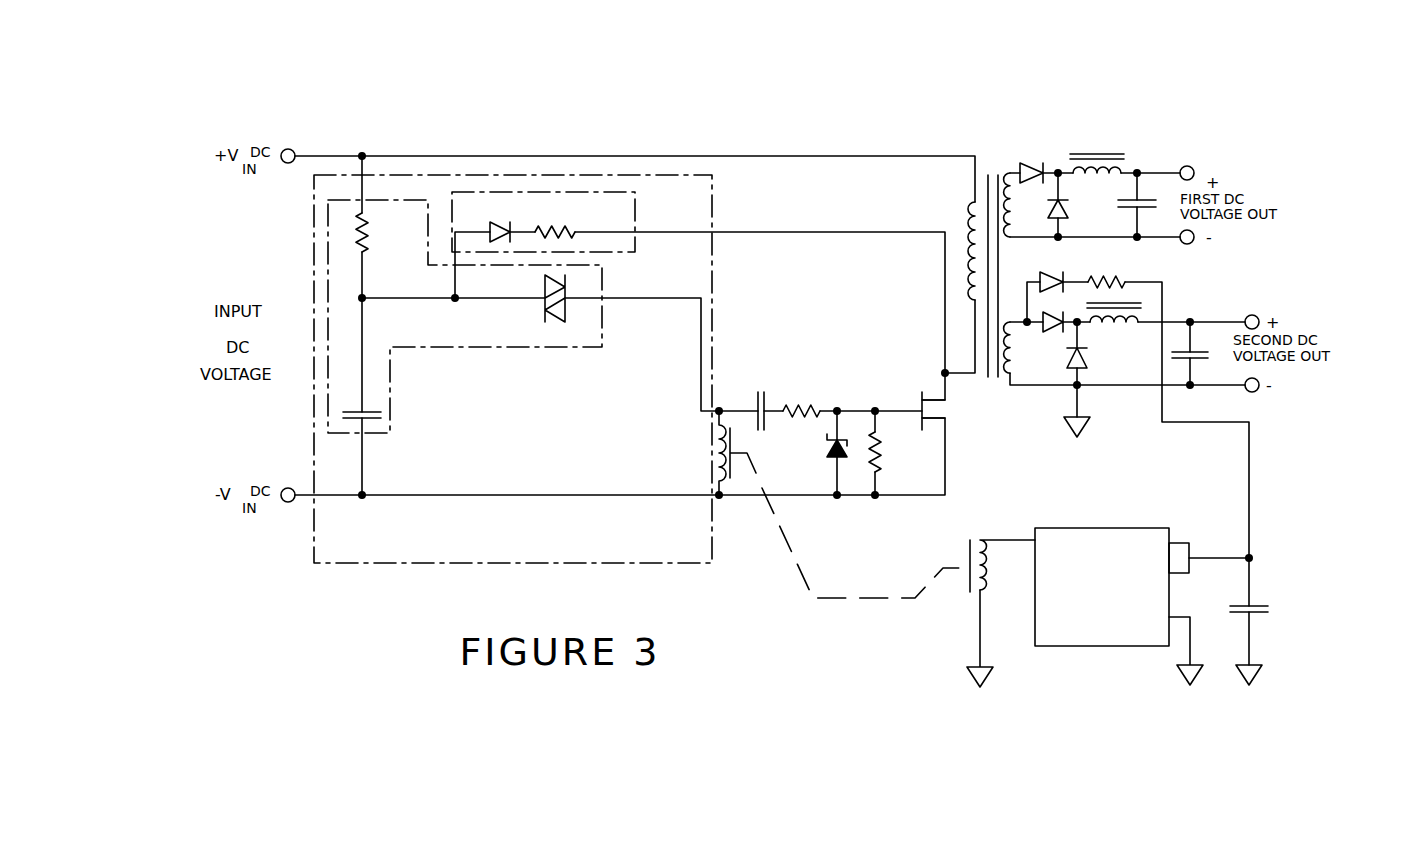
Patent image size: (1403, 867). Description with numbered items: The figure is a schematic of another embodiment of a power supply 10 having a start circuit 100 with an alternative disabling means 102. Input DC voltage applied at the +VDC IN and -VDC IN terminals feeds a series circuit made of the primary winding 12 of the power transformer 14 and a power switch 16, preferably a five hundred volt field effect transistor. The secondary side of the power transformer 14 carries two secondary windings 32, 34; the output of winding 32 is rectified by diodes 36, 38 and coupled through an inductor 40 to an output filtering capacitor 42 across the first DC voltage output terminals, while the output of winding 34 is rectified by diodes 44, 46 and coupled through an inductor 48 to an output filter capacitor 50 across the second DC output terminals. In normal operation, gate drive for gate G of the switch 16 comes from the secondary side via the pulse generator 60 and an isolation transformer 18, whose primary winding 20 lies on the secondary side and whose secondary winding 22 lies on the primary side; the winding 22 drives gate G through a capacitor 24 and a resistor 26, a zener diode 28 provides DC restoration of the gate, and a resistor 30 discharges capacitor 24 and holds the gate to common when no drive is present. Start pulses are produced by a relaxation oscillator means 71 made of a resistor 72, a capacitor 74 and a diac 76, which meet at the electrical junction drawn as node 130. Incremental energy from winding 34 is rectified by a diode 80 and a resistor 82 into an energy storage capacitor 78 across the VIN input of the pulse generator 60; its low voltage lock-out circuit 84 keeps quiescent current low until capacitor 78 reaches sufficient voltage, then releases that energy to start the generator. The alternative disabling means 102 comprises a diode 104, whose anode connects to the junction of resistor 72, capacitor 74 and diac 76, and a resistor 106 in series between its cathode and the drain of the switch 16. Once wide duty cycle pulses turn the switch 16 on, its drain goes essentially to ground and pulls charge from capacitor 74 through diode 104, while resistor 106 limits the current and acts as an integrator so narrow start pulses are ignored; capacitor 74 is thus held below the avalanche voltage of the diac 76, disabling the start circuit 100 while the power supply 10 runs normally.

The power supply 10 is at (566, 103).
The primary winding 12 is at (969, 213).
The power transformer 14 is at (992, 170).
The power switch 16 is at (917, 392).
The isolation transformer 18 is at (963, 548).
The primary winding 20 is at (982, 592).
The secondary winding 22 is at (712, 440).
The capacitor 24 is at (760, 388).
The resistor 26 is at (811, 406).
The zener diode 28 is at (830, 452).
The resistor 30 is at (890, 446).
The secondary winding 32 is at (1010, 168).
The secondary winding 34 is at (1015, 318).
The diode 36 is at (1031, 165).
The diode 38 is at (1069, 215).
The inductor 40 is at (1095, 151).
The output filtering capacitor 42 is at (1119, 200).
The diode 44 is at (1050, 329).
The diode 46 is at (1069, 364).
The inductor 48 is at (1128, 331).
The output filter capacitor 50 is at (1192, 350).
The pulse generator 60 is at (1093, 632).
The relaxation oscillator means 71 is at (608, 276).
The resistor 72 is at (372, 238).
The capacitor 74 is at (345, 409).
The diac 76 is at (545, 292).
The capacitor 78 is at (1271, 600).
The diode 80 is at (1056, 269).
The resistor 82 is at (1119, 280).
The low voltage lock-out circuit 84 is at (1178, 542).
The start circuit 100 is at (513, 369).
The alternative disabling means 102 is at (640, 222).
The diode 104 is at (508, 221).
The resistor 106 is at (565, 231).
The circuit node 130 is at (364, 296).